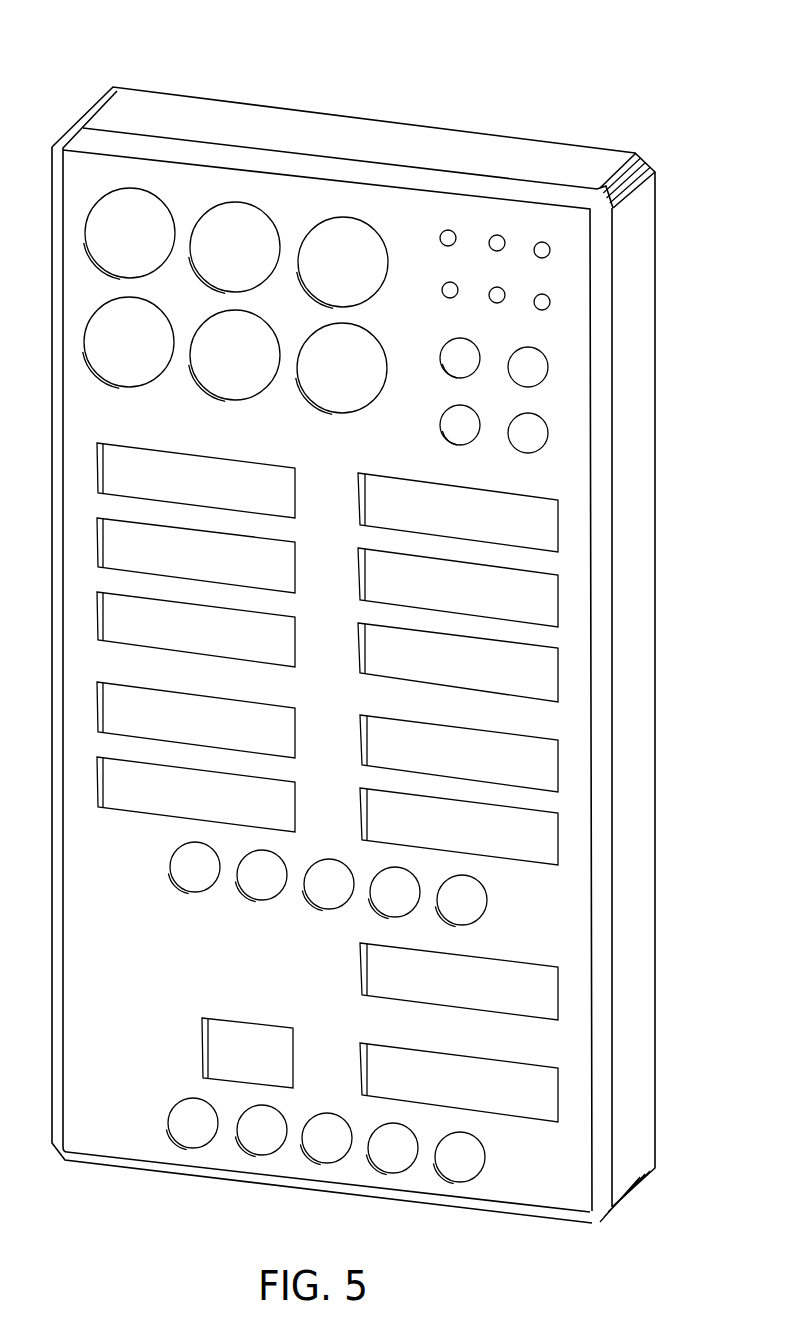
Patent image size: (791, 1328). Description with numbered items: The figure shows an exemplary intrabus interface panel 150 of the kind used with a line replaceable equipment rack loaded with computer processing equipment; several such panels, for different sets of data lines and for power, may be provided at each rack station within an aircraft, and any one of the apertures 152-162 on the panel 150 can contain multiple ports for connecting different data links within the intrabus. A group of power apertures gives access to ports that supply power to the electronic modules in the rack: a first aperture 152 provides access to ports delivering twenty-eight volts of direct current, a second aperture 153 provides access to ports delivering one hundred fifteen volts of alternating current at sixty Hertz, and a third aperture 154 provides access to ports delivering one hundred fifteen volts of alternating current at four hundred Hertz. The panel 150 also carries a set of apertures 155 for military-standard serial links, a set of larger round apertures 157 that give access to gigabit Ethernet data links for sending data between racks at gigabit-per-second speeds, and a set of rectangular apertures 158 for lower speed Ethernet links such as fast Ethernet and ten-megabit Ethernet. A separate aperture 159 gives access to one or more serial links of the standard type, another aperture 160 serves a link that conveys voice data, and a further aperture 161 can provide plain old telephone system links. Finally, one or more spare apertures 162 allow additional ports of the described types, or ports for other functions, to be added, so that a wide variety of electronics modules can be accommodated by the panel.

The intrabus interface panel 150 is at (637, 38).
The first aperture 152 is at (247, 1053).
The second aperture 153 is at (459, 1082).
The third aperture 154 is at (459, 625).
The set of apertures 155 is at (494, 395).
The third set of apertures 157 is at (78, 377).
The fourth set of apertures 158 is at (86, 637).
The separate aperture 159 is at (196, 720).
The aperture 160 is at (196, 794).
The third aperture 161 is at (459, 753).
The spare apertures 162 is at (459, 826).